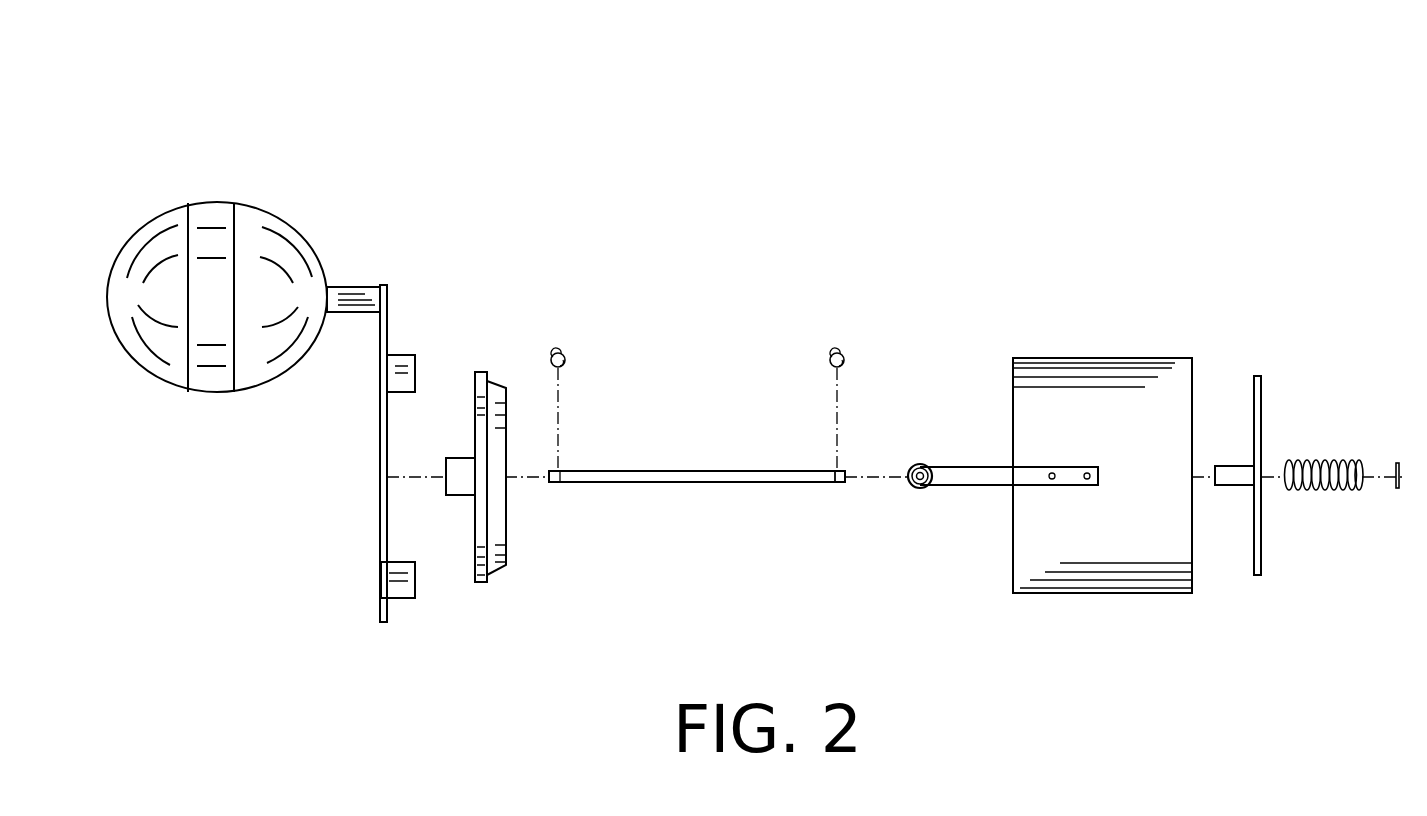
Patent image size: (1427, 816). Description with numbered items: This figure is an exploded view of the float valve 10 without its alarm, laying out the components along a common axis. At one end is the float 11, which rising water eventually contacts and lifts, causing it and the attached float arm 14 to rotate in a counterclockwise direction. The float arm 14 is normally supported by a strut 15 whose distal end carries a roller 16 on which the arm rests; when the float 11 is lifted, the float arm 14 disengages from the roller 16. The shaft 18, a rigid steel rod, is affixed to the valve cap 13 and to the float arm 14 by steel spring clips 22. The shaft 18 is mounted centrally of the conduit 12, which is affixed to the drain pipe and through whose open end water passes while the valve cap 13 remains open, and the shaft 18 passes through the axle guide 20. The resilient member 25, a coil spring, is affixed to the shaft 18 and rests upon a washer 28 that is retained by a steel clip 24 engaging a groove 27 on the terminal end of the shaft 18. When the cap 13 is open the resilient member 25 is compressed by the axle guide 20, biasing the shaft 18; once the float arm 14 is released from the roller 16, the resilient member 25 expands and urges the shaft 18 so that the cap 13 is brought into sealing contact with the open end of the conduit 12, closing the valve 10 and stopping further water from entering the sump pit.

The float valve 10 is at (698, 118).
The float 11 is at (255, 227).
The conduit 12 is at (1085, 383).
The valve cap 13 is at (483, 377).
The float arm 14 is at (380, 453).
The strut 15 is at (982, 477).
The roller 16 is at (920, 463).
The shaft 18 is at (702, 475).
The axle guide 20 is at (1258, 380).
The steel spring clip 22 is at (557, 352).
The steel clip 24 is at (838, 351).
The resilient member 25 is at (1333, 487).
The groove 27 is at (838, 490).
The washer 28 is at (1395, 463).